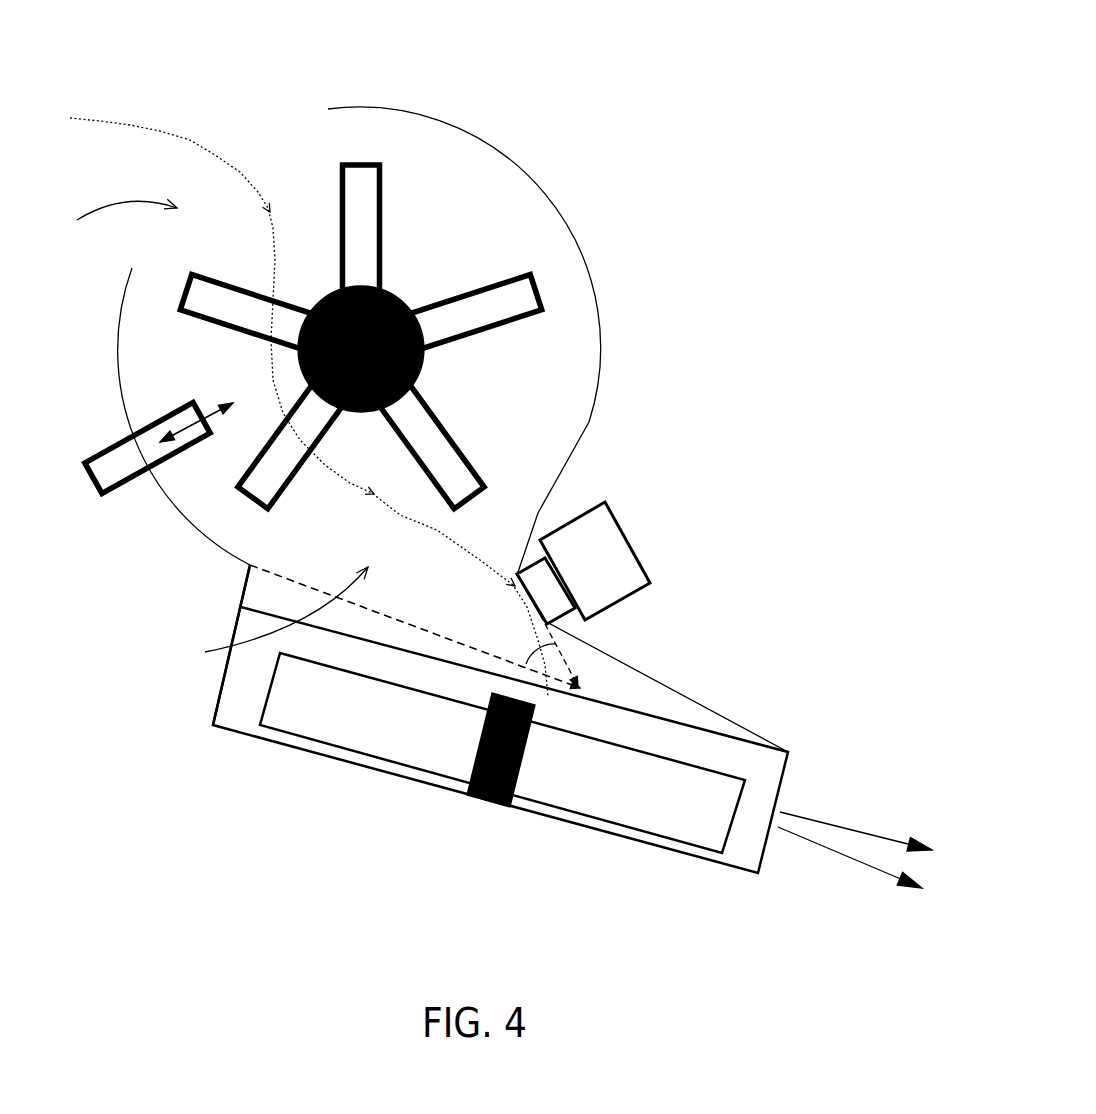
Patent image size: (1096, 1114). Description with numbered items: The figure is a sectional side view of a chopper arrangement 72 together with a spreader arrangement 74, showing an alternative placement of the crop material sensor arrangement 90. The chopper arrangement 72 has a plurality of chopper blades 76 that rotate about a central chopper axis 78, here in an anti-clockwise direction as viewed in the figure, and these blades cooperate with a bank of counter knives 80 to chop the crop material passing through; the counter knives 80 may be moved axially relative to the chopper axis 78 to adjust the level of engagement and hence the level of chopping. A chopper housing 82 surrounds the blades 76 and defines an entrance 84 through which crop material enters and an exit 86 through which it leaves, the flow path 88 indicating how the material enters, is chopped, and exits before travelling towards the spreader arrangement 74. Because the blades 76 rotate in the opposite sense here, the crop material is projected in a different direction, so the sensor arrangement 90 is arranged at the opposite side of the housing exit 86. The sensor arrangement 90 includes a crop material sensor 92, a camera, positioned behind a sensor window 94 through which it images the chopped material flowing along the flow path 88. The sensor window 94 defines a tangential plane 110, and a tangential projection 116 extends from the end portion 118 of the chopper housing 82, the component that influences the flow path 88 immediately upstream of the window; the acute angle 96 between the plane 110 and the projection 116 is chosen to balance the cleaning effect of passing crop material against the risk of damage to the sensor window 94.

The chopper arrangement 72 is at (675, 165).
The spreader arrangement 74 is at (530, 741).
The chopper blades 76 is at (533, 280).
The central chopper axis 78 is at (427, 363).
The counter knives 80 is at (121, 497).
The chopper housing 82 is at (470, 132).
The entrance 84 is at (108, 220).
The exit 86 is at (270, 617).
The flow path 88 is at (196, 141).
The crop material sensor arrangement 90 is at (647, 520).
The crop material sensor 92 is at (648, 585).
The sensor window 94 is at (596, 604).
The angle 96 is at (573, 673).
The plane 110 is at (563, 658).
The tangential projection 116 is at (378, 615).
The end portion 118 is at (245, 565).